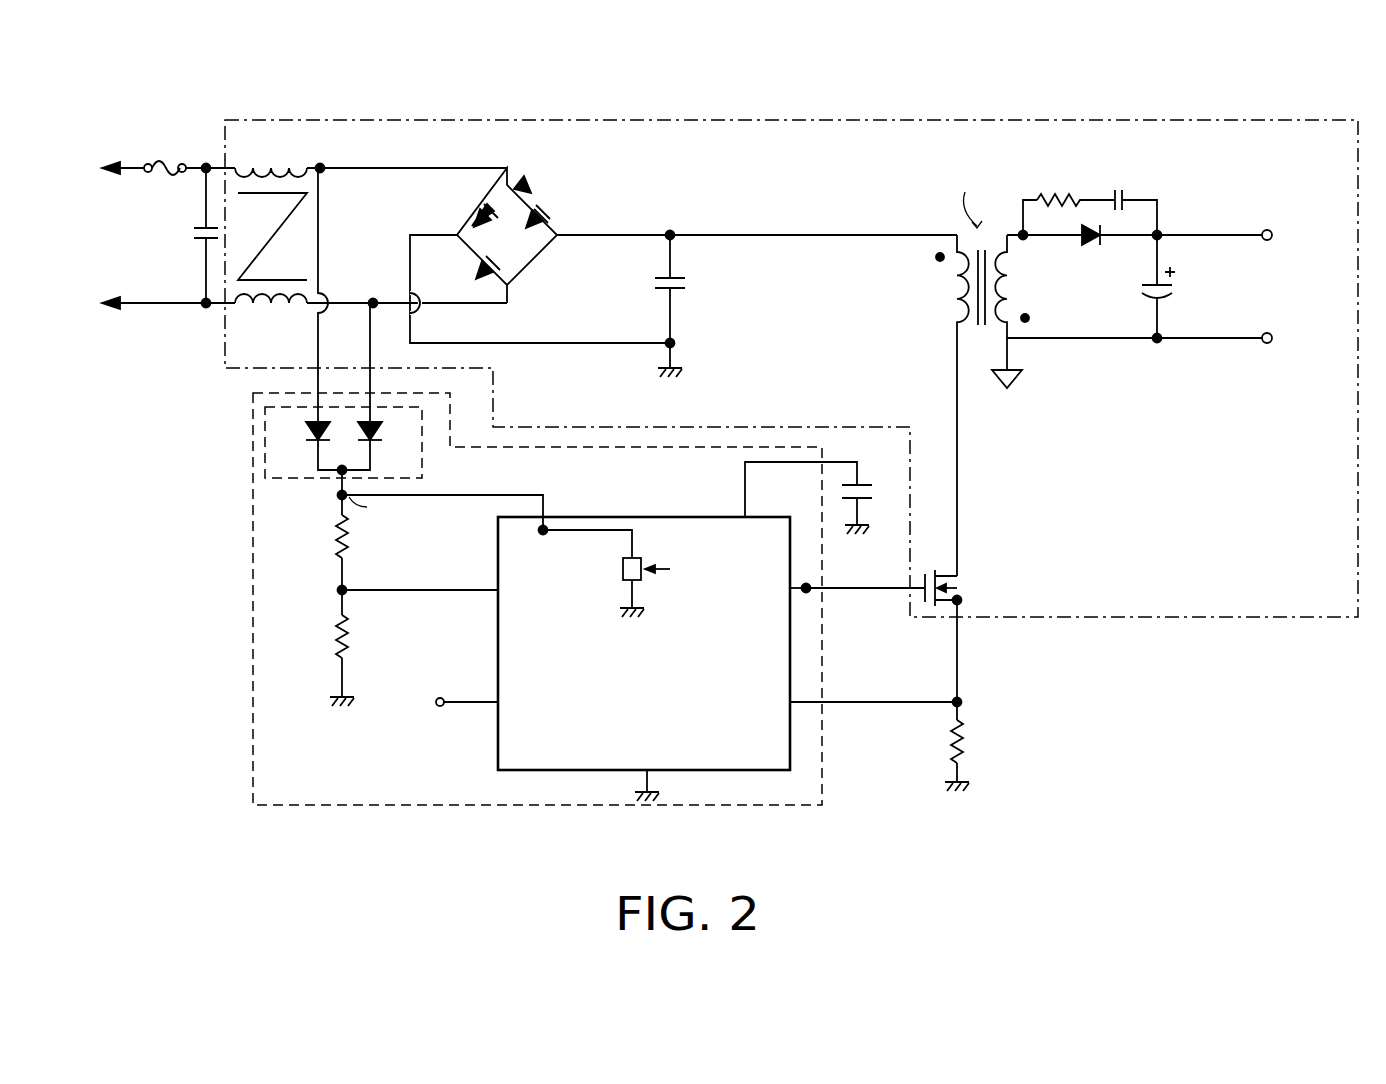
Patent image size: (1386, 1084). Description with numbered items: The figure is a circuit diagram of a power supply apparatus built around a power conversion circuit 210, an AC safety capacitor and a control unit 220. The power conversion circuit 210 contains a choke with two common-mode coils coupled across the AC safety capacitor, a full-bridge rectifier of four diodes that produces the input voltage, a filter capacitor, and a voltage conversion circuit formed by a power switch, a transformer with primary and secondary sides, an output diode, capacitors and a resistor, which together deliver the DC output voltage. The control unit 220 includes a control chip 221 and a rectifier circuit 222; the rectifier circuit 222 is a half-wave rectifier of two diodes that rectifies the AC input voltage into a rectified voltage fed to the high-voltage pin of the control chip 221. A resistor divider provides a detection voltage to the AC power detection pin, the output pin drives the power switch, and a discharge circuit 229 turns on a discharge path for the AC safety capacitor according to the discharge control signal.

The power conversion circuit 210 is at (1265, 119).
The control unit 220 is at (563, 511).
The control chip 221 is at (611, 643).
The rectifier circuit 222 is at (262, 454).
The discharge circuit 229 is at (642, 557).